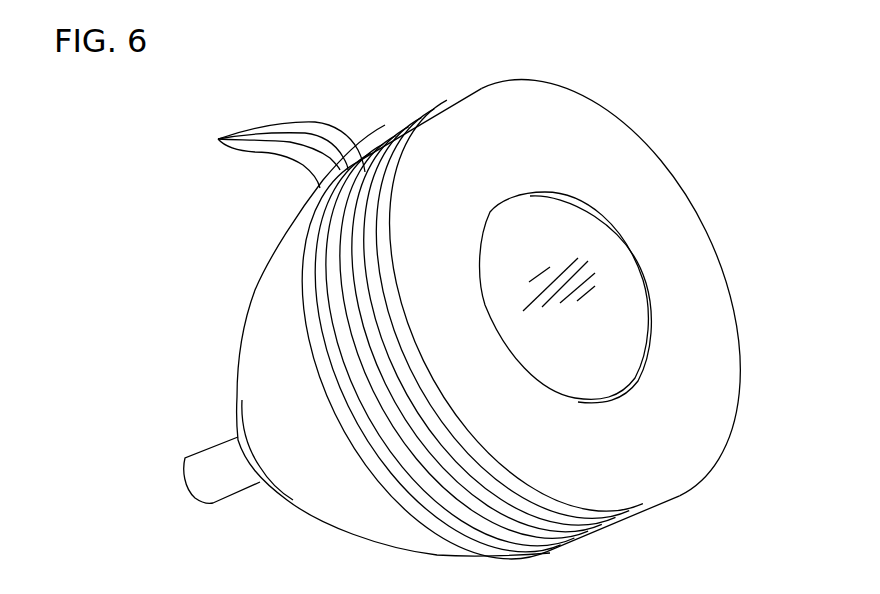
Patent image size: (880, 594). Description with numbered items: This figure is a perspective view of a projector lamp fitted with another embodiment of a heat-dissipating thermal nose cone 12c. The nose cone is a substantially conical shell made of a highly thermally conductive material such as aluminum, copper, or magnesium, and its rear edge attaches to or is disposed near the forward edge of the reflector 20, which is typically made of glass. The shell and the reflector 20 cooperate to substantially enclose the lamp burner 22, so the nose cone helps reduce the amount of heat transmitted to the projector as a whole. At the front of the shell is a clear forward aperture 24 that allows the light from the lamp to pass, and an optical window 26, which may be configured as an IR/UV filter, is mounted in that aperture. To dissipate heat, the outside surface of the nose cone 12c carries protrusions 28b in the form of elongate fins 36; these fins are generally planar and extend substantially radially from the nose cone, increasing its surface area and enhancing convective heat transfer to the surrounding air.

The thermal nose cone 12c is at (493, 68).
The reflector 20 is at (266, 310).
The lamp burner 22 is at (210, 467).
The forward aperture 24 is at (580, 246).
The optical window 26 is at (584, 353).
The protrusions 28b is at (297, 240).
The elongate fins 36 is at (274, 155).